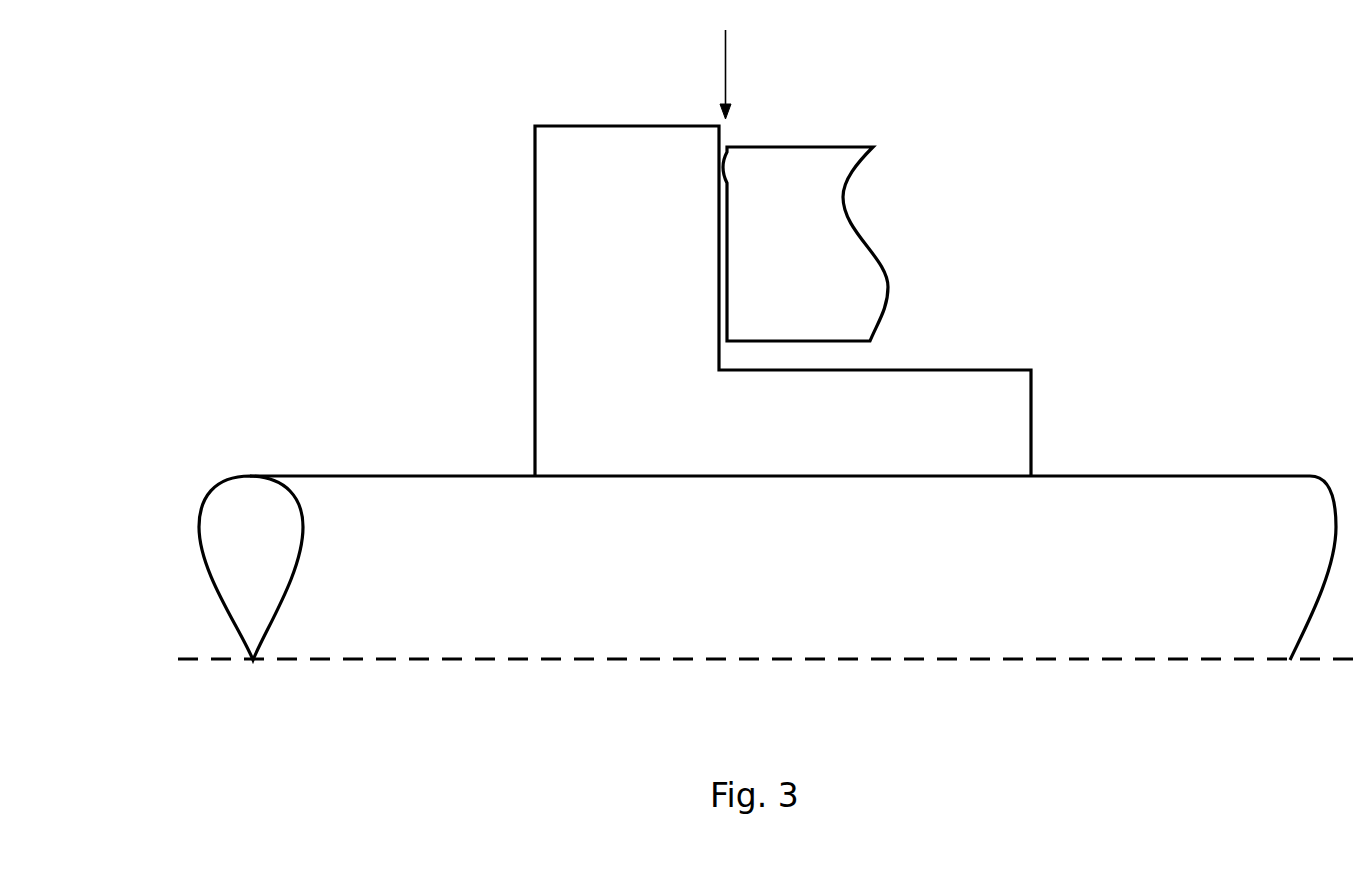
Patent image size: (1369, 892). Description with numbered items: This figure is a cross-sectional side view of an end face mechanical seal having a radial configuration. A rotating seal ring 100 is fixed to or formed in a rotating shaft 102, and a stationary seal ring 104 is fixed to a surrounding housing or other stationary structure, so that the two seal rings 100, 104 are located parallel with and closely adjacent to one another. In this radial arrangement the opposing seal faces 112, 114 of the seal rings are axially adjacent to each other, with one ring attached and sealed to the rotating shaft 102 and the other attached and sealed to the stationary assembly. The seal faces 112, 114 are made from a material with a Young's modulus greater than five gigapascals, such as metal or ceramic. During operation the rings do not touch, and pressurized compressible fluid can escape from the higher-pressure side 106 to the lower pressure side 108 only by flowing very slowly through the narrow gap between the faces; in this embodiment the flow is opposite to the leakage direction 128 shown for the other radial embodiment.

The rotating seal ring 100 is at (710, 427).
The rotating shaft 102 is at (796, 597).
The stationary seal ring 104 is at (830, 311).
The higher-pressure side 106 is at (399, 306).
The lower pressure side 108 is at (1229, 306).
The seal face 112 is at (719, 173).
The seal face 114 is at (725, 163).
The leakage direction 128 is at (725, 62).